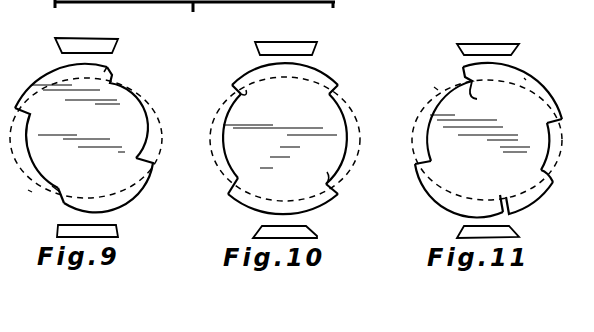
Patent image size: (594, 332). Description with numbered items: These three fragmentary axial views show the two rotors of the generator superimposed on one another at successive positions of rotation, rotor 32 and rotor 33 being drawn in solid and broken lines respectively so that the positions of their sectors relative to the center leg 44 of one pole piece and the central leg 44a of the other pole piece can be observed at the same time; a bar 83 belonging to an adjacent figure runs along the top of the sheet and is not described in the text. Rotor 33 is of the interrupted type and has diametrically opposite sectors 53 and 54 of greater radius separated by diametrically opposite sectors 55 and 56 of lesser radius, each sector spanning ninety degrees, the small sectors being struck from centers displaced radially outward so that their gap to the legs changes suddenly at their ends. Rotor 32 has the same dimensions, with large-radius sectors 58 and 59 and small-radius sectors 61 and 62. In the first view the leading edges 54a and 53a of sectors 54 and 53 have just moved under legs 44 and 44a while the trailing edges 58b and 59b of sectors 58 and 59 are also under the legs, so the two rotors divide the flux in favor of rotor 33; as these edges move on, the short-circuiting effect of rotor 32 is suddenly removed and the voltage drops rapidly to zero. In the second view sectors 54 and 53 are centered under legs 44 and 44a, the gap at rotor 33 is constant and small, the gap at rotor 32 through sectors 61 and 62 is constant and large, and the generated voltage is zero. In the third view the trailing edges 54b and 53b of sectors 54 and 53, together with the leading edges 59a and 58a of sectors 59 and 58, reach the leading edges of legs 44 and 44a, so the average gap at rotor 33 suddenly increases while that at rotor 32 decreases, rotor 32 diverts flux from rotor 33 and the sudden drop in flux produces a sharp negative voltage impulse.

In FIG. 9, the rotor 32 is at (143, 82).
In FIG. 10, the rotor 32 is at (358, 170).
In FIG. 11, the rotor 32 is at (561, 170).
In FIG. 9, the rotor 33 is at (42, 79).
In FIG. 10, the rotor 33 is at (250, 71).
In FIG. 11, the rotor 33 is at (524, 78).
In FIG. 9, the center leg 44 is at (100, 37).
In FIG. 10, the center leg 44 is at (297, 45).
In FIG. 11, the center leg 44 is at (486, 46).
In FIG. 9, the central leg 44a is at (119, 229).
In FIG. 10, the central leg 44a is at (316, 231).
In FIG. 11, the central leg 44a is at (519, 234).
In FIG. 9, the sector 53 is at (135, 190).
In FIG. 10, the sector 53 is at (320, 203).
In FIG. 11, the sector 53 is at (449, 210).
In FIG. 9, the leading edge 53a is at (66, 197).
In FIG. 10, the trailing edge 53b is at (325, 183).
In FIG. 11, the trailing edge 53b is at (500, 193).
In FIG. 9, the sector 54 is at (53, 67).
In FIG. 10, the sector 54 is at (300, 74).
In FIG. 11, the sector 54 is at (511, 78).
In FIG. 9, the leading edge 54a is at (115, 72).
In FIG. 10, the leading edge 54a is at (329, 90).
In FIG. 10, the trailing edge 54b is at (248, 92).
In FIG. 11, the trailing edge 54b is at (476, 98).
In FIG. 11, the sector 55 is at (551, 185).
In FIG. 10, the sector 56 is at (245, 132).
In FIG. 11, the sector 56 is at (437, 133).
In FIG. 10, the sector 58 is at (354, 108).
In FIG. 11, the sector 58 is at (562, 133).
In FIG. 10, the leading edge 58a is at (330, 175).
In FIG. 11, the leading edge 58a is at (517, 208).
In FIG. 9, the trailing edge 58b is at (116, 79).
In FIG. 10, the trailing edge 58b is at (338, 95).
In FIG. 9, the sector 59 is at (33, 188).
In FIG. 10, the sector 59 is at (215, 167).
In FIG. 11, the sector 59 is at (436, 89).
In FIG. 10, the leading edge 59a is at (233, 92).
In FIG. 11, the leading edge 59a is at (461, 70).
In FIG. 9, the trailing edge 59b is at (55, 186).
In FIG. 11, the sector 61 is at (520, 95).
In FIG. 11, the sector 62 is at (436, 195).
In FIG. 9, the bar 83 is at (193, 3).